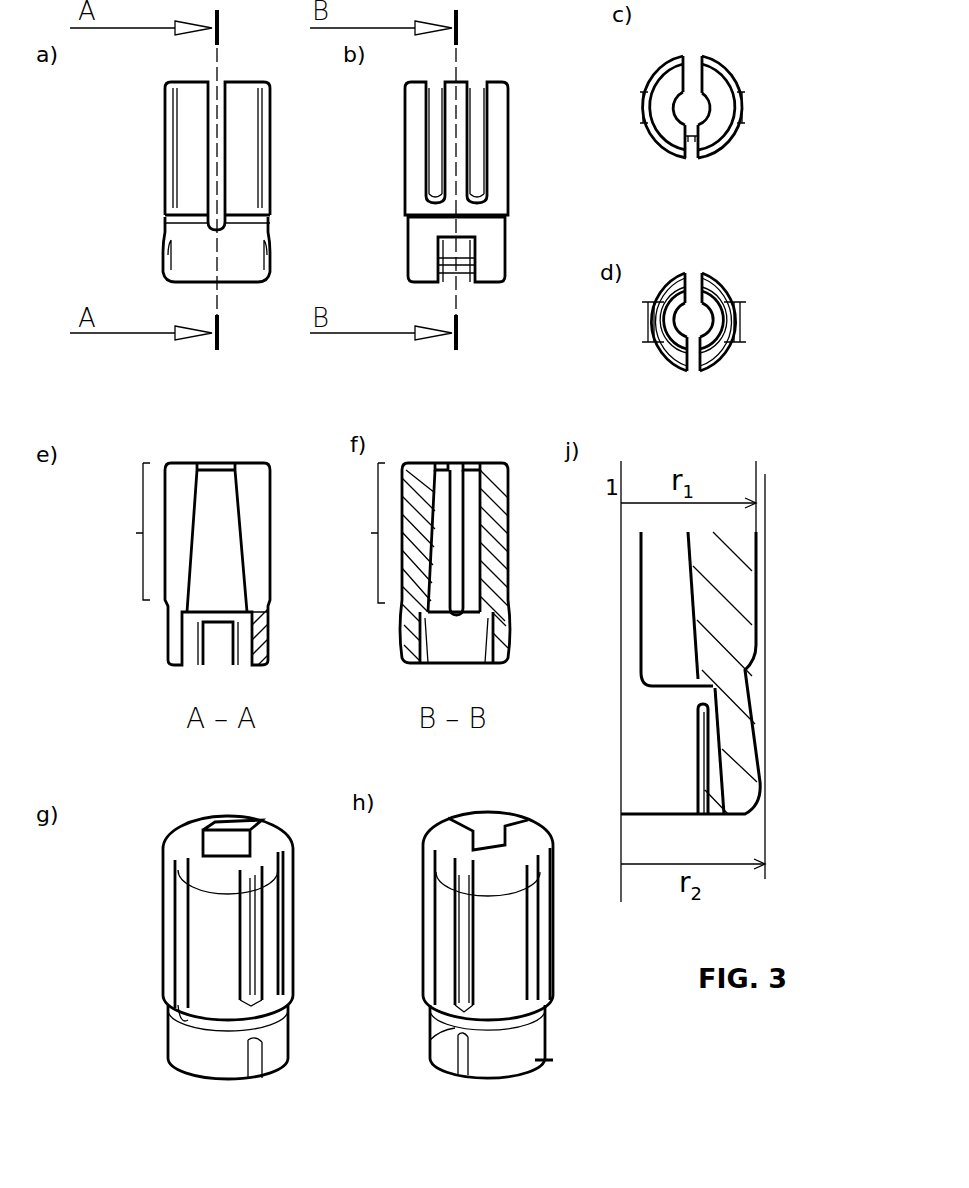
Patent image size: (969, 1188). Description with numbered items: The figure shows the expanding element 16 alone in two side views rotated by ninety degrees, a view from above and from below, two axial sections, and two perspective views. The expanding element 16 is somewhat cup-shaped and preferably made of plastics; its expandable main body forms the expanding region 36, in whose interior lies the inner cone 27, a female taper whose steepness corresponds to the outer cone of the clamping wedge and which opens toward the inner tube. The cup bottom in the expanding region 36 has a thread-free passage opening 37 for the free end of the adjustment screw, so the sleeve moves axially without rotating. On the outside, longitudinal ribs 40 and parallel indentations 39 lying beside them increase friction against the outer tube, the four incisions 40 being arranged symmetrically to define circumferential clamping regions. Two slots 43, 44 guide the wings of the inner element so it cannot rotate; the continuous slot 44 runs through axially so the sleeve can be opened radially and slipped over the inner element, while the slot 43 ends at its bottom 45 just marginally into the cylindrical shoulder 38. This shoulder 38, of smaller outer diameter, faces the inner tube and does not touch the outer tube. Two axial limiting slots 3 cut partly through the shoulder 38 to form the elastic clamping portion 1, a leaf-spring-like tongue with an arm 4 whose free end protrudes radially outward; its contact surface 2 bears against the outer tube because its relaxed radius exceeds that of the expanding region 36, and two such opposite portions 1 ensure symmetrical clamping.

The elastic clamping portion 1 is at (268, 250).
The contact surface 2 is at (268, 270).
The axial limiting slot 3 is at (475, 264).
The arm 4 is at (740, 728).
The expanding element 16 is at (128, 80).
The inner cone 27 is at (235, 550).
The expanding region 36 is at (229, 537).
The thread-free passage opening 37 is at (705, 100).
The cylindrical shoulder 38 is at (240, 260).
The axial indentation 39 is at (268, 167).
The axial rib 40 is at (272, 136).
The slot 43 is at (216, 195).
The continuous slot 44 is at (694, 68).
The bottom of slot 45 is at (185, 235).